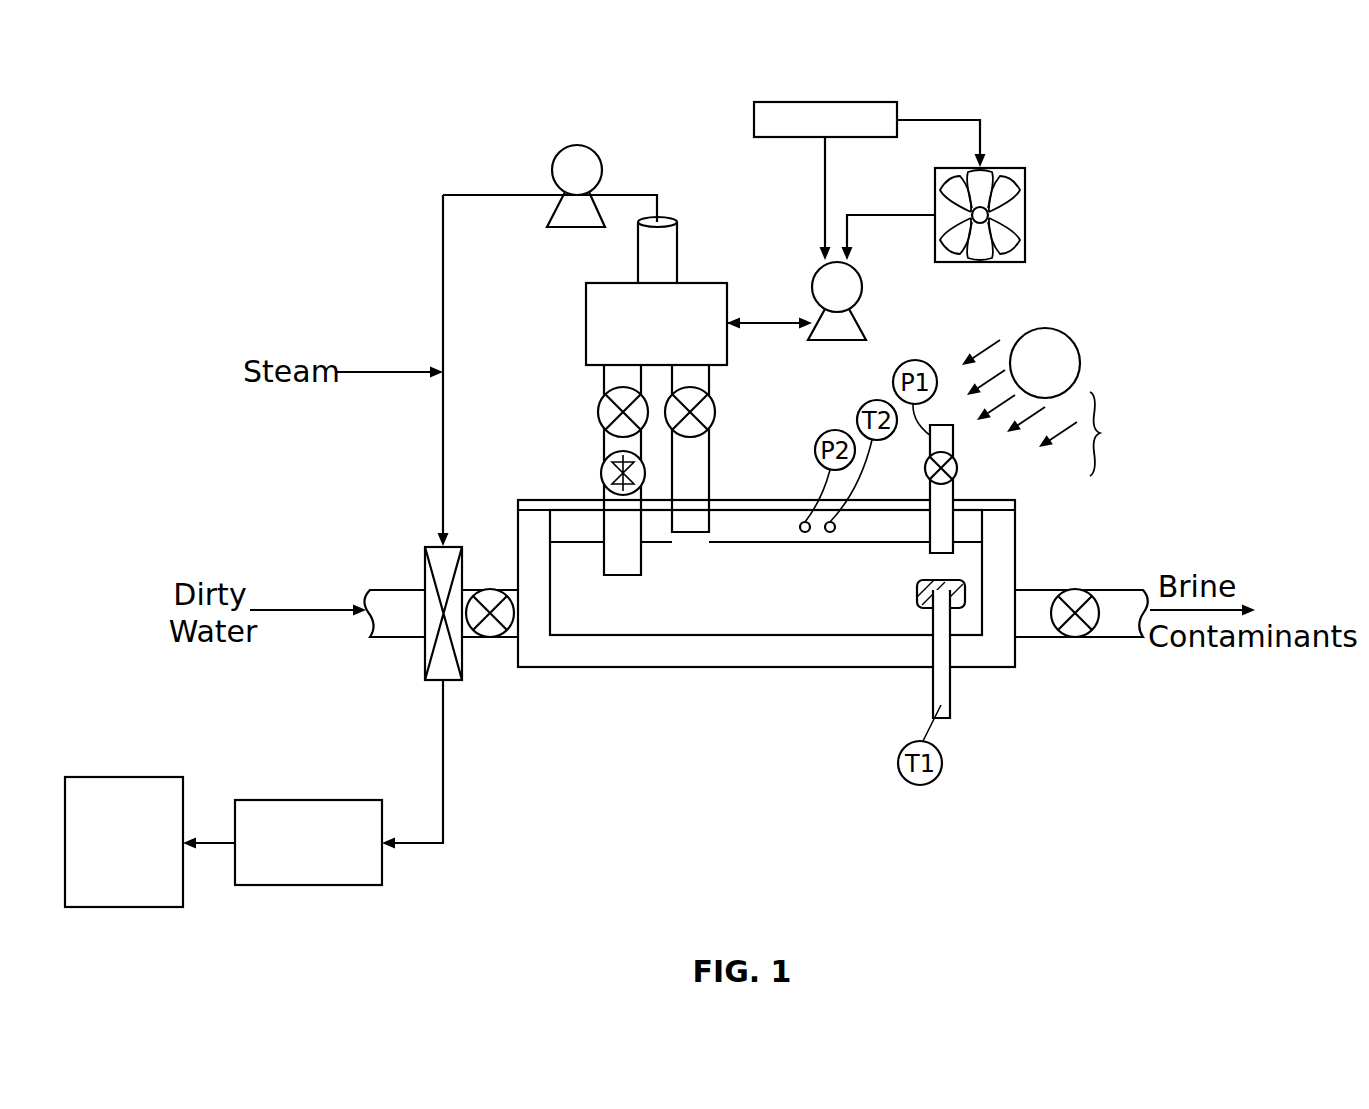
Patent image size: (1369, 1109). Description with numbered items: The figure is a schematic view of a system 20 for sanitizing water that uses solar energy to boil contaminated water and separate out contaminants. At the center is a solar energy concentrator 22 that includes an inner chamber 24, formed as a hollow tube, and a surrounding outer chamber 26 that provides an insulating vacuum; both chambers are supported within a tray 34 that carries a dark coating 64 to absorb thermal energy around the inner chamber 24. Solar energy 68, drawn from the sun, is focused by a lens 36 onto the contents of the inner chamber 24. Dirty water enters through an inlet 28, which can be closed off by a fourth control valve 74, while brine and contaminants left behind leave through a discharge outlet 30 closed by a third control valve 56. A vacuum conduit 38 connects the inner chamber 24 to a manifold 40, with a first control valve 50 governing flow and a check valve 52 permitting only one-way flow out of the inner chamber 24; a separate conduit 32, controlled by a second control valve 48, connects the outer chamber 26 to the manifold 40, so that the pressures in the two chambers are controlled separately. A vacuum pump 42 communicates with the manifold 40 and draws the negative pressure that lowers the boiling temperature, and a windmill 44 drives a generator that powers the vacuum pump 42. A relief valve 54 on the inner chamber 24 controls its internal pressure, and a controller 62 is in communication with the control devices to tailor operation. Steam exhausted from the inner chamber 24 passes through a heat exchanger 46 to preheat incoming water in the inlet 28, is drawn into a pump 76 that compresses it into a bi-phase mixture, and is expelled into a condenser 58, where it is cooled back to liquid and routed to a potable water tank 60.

The system for sanitizing water 20 is at (1060, 318).
The solar energy concentrator 22 is at (805, 572).
The inner chamber 24 is at (772, 588).
The outer chamber 26 is at (871, 525).
The inlet 28 is at (400, 632).
The discharge outlet 30 is at (1029, 603).
The conduit 32 is at (698, 471).
The tray 34 is at (862, 655).
The lens 36 is at (759, 508).
The vacuum conduit 38 is at (604, 446).
The manifold 40 is at (586, 313).
The vacuum pump 42 is at (850, 281).
The windmill 44 is at (1022, 157).
The heat exchanger 46 is at (415, 556).
The second control valve 48 is at (713, 412).
The first control valve 50 is at (600, 412).
The check valve 52 is at (602, 480).
The relief valve 54 is at (958, 470).
The third control valve 56 is at (1079, 590).
The condenser 58 is at (290, 800).
The potable water tank 60 is at (120, 777).
The controller 62 is at (812, 102).
The dark coating 64 is at (603, 648).
The solar energy 68 is at (1100, 433).
The fourth control valve 74 is at (490, 630).
The pump 76 is at (557, 163).